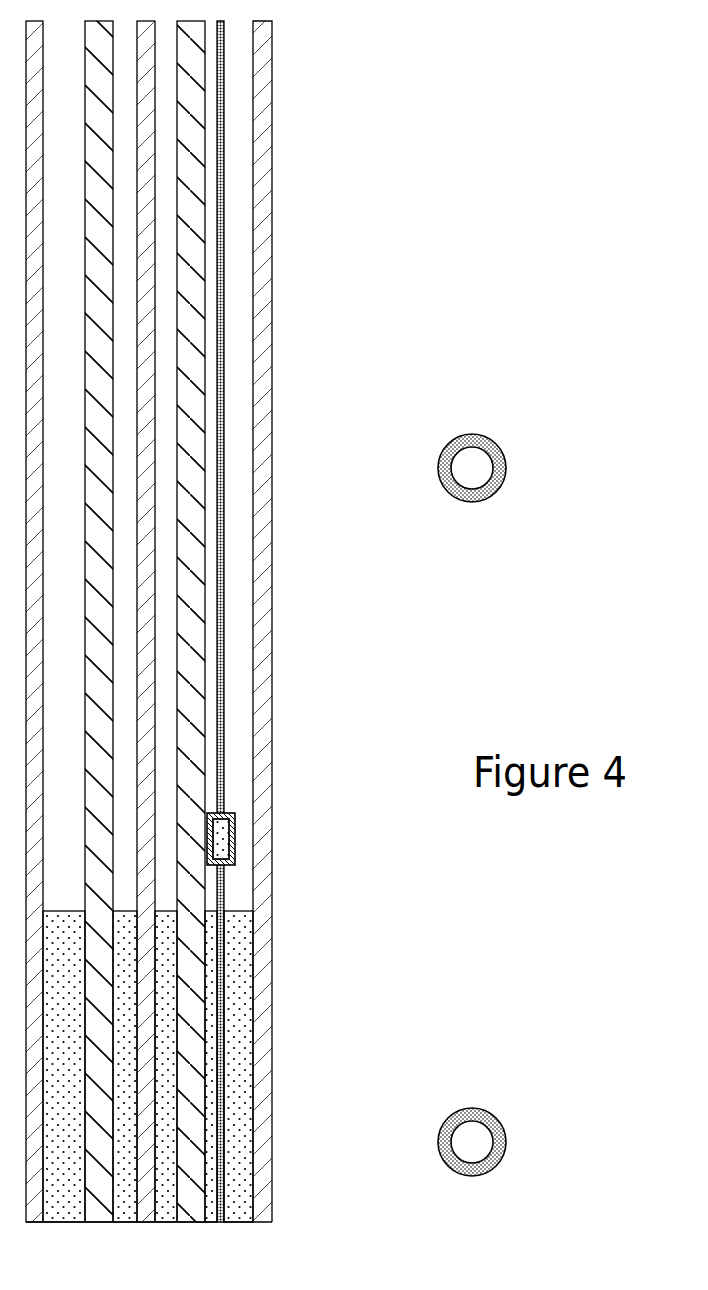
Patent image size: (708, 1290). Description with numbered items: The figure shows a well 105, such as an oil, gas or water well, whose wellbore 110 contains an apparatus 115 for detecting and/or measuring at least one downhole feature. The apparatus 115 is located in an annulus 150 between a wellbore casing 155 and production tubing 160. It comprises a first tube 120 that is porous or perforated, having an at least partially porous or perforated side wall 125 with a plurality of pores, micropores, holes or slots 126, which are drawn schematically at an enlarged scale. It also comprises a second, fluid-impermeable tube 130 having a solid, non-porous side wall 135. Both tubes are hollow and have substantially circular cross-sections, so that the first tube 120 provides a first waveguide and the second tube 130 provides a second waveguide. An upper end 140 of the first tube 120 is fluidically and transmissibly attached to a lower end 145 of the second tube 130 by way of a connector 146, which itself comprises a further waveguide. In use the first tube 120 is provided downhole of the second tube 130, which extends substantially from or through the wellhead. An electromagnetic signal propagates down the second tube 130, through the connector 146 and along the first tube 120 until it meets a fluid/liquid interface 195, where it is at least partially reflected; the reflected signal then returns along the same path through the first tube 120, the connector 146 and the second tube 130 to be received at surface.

The well 105 is at (300, 277).
The wellbore 110 is at (245, 397).
The apparatus 115 is at (222, 472).
The first tube 120 is at (434, 1150).
The side wall 125 is at (498, 1163).
The pores 126 is at (228, 1120).
The second tube 130 is at (223, 652).
The side wall 135 is at (498, 487).
The end of first tube 140 is at (223, 878).
The end of second tube 145 is at (223, 773).
The connector 146 is at (237, 826).
The annulus 150 is at (240, 593).
The wellbore casing 155 is at (272, 700).
The production tubing 160 is at (207, 182).
The fluid/liquid interface 195 is at (262, 912).